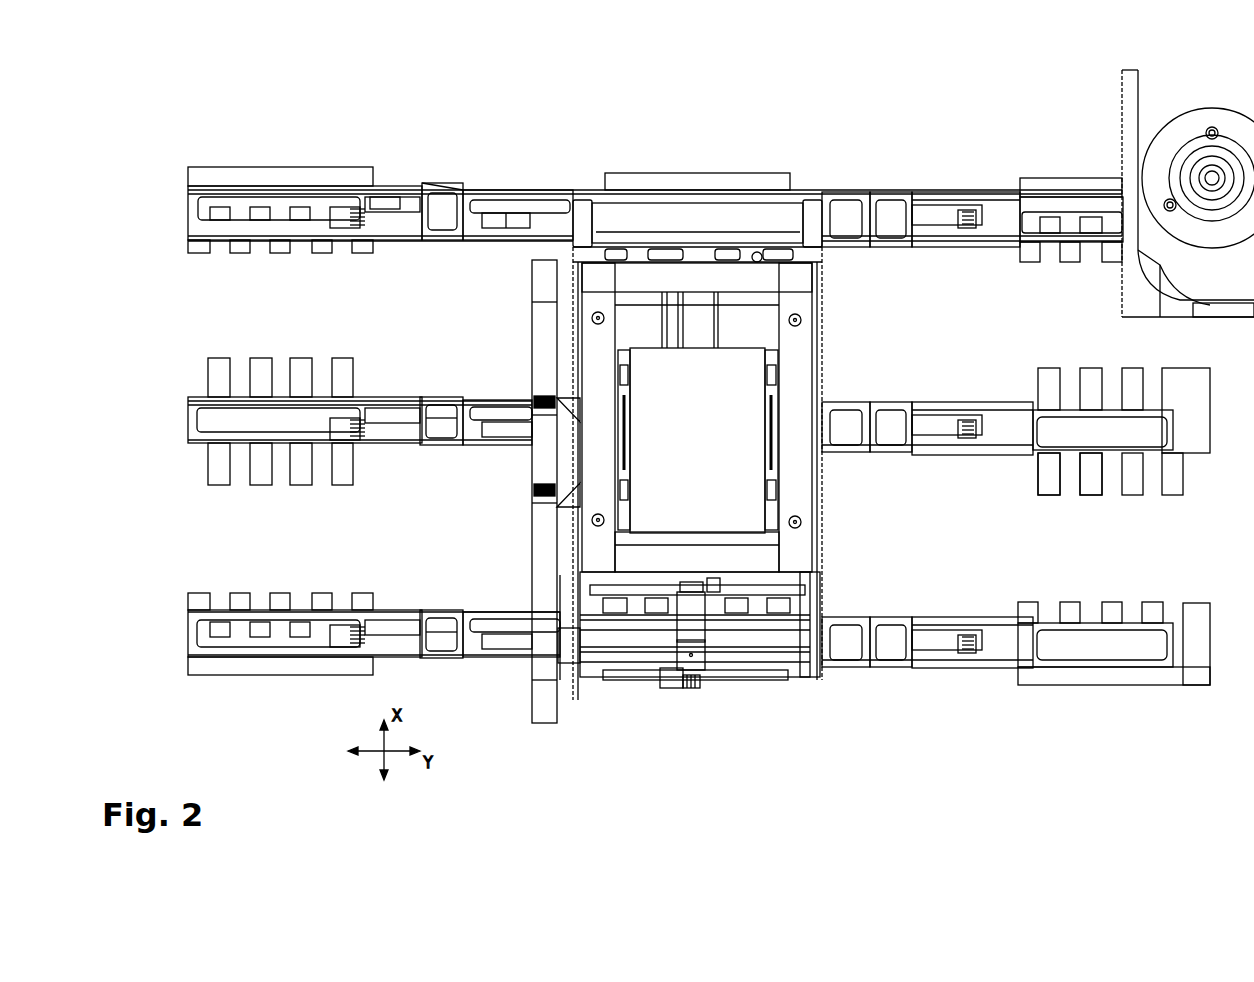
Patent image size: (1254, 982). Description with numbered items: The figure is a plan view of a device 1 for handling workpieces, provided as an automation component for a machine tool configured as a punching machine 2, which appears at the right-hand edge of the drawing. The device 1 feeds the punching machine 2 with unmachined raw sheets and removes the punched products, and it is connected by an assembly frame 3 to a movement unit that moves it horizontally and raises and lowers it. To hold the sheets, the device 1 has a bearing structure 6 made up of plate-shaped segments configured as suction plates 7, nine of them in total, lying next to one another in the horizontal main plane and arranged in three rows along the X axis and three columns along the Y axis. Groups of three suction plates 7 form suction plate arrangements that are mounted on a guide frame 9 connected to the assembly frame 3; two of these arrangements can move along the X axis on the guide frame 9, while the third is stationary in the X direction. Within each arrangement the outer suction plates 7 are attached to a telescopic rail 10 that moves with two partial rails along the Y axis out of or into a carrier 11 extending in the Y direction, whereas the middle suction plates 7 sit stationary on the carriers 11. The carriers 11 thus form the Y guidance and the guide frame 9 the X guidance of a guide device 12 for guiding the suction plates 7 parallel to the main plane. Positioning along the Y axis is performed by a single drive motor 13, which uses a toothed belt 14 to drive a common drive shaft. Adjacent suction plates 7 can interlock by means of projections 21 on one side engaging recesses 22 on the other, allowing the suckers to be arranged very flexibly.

The device 1 is at (862, 125).
The punching machine 2 is at (1140, 140).
The assembly frame 3 is at (823, 373).
The bearing structure 6 is at (262, 134).
The suction plate 7 is at (353, 158).
The guide frame 9 is at (818, 318).
The telescopic rail 10 is at (957, 192).
The carrier 11 is at (538, 192).
The guide device 12 is at (835, 575).
The drive motor 13 is at (690, 625).
The toothed belt 14 is at (678, 688).
The projection 21 is at (1047, 482).
The recess 22 is at (1068, 477).